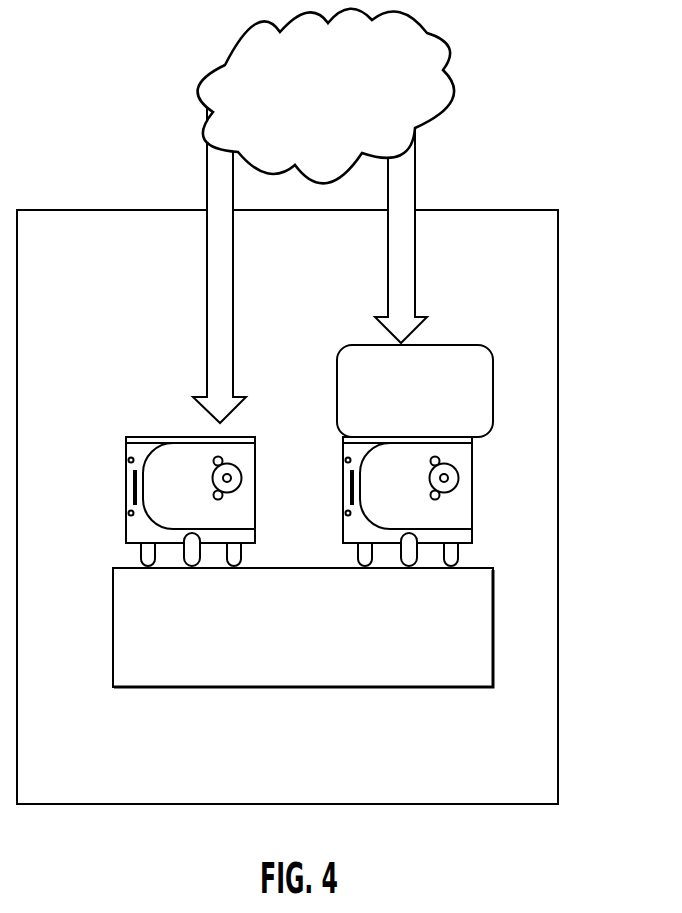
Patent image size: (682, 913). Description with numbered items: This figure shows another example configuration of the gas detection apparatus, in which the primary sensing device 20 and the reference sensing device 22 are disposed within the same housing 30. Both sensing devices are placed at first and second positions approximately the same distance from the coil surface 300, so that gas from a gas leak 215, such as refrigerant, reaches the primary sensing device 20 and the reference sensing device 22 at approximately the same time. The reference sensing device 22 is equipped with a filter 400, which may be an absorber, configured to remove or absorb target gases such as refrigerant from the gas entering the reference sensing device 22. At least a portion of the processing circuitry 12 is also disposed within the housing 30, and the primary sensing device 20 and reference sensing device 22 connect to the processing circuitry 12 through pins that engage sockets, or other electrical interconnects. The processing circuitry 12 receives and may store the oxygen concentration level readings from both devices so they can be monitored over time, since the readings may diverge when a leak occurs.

The gas leak 215 is at (225, 49).
The coil surface 300 is at (315, 442).
The housing 30 is at (558, 270).
The filter 400 is at (493, 387).
The primary sensing device 20 is at (126, 480).
The reference sensing device 22 is at (473, 505).
The processing circuitry 12 is at (493, 618).